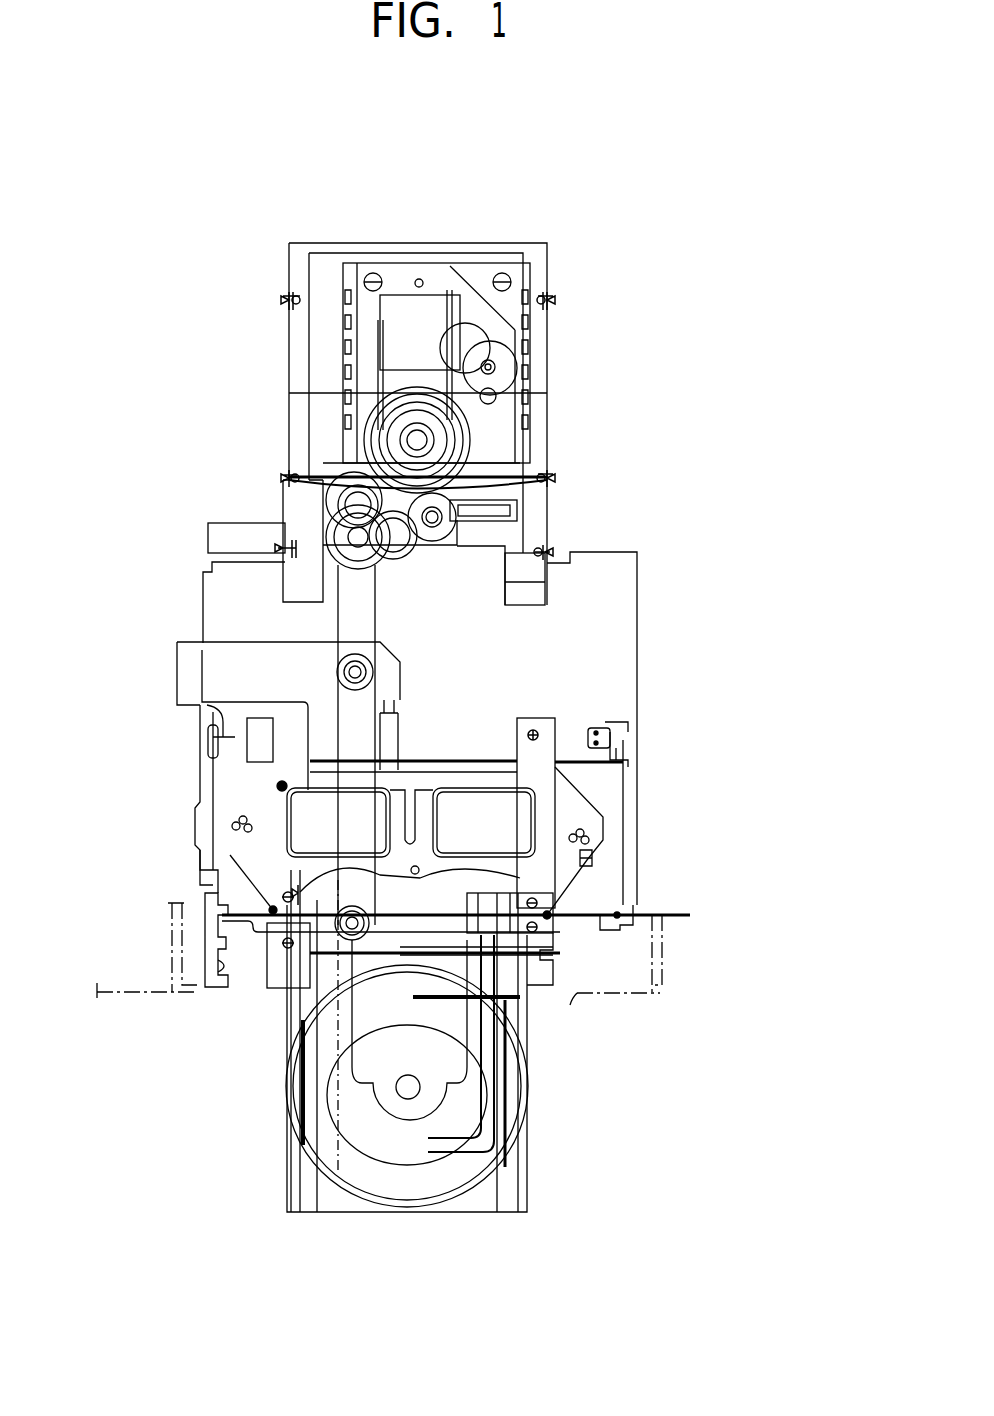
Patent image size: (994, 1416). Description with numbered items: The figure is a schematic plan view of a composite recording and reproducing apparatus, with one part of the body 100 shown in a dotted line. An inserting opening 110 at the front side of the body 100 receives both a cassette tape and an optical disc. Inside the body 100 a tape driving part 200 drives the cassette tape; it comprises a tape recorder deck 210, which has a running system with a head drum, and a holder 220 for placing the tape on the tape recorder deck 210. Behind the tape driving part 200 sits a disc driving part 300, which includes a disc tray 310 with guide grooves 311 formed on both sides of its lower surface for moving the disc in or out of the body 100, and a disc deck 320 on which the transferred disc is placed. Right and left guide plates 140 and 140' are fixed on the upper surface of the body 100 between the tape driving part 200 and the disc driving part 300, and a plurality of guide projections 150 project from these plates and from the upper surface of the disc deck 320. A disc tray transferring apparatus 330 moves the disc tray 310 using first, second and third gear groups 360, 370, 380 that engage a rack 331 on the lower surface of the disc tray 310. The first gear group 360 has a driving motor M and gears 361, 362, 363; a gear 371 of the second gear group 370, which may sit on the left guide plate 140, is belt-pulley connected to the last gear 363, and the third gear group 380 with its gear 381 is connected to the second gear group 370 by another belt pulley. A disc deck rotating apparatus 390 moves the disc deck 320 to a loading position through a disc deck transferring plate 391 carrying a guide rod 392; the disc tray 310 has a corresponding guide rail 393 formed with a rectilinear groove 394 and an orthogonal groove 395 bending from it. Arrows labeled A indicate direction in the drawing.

The body 100 is at (648, 998).
The inserting opening 110 is at (572, 1000).
The left guide plate 140 is at (235, 716).
The right guide plate 140' is at (666, 835).
The guide projections 150 is at (282, 300).
The tape driving part 200 is at (640, 648).
The tape recorder deck 210 is at (637, 738).
The holder 220 is at (207, 955).
The disc driving part 300 is at (566, 425).
The disc tray 310 is at (268, 1148).
The guide grooves 311 is at (297, 1020).
The disc deck 320 is at (566, 335).
The disc tray transferring apparatus 330 is at (330, 626).
The rack 331 is at (230, 855).
The first gear group 360 is at (500, 633).
The gear 361 is at (350, 555).
The gear 362 is at (370, 560).
The last gear 363 is at (395, 560).
The second gear group 370 is at (345, 692).
The gear 371 is at (350, 672).
The third gear group 380 is at (208, 922).
The gear 381 is at (372, 975).
The disc deck rotating apparatus 390 is at (503, 537).
The disc deck transferring plate 391 is at (522, 510).
The guide rod 392 is at (345, 500).
The guide rail 393 is at (560, 950).
The rectilinear groove 394 is at (494, 1140).
The orthogonal groove 395 is at (460, 1153).
The driving motor M is at (440, 532).
The direction arrow A is at (278, 510).